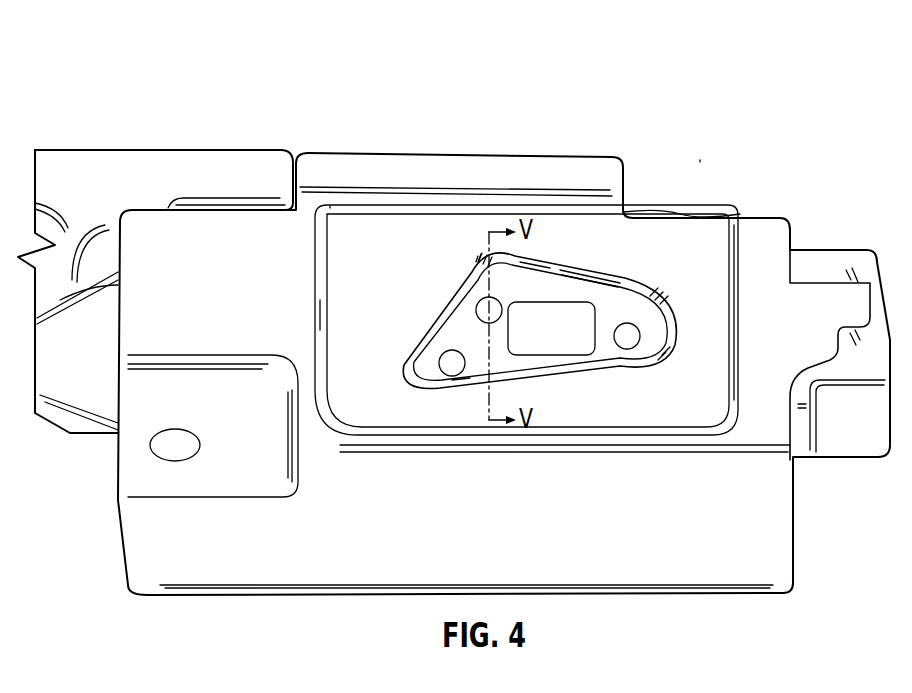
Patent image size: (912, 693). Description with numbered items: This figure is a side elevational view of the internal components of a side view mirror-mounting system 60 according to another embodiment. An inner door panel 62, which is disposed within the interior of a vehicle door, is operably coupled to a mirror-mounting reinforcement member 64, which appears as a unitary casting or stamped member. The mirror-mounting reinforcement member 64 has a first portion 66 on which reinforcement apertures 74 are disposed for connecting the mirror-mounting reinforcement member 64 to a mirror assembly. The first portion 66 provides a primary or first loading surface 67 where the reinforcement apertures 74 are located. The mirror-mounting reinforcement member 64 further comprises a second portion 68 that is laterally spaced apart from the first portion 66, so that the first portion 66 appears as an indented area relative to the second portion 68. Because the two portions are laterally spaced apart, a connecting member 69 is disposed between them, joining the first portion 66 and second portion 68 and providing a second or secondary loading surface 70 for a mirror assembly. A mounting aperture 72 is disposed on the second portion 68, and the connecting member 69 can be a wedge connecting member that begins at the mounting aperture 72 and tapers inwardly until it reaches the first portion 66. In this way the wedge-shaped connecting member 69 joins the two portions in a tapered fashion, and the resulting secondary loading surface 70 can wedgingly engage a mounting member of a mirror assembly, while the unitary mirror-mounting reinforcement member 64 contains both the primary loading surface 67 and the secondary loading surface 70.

The internal components of a side view mirror-mounting system 60 is at (663, 168).
The inner door panel 62 is at (107, 167).
The mirror-mounting reinforcement member 64 is at (780, 511).
The first portion 66 is at (454, 319).
The first loading surface 67 is at (475, 373).
The second portion 68 is at (700, 255).
The connecting member 69 is at (625, 293).
The secondary loading surface 70 is at (569, 285).
The mounting aperture 72 is at (678, 318).
The reinforcement apertures 74 is at (498, 300).